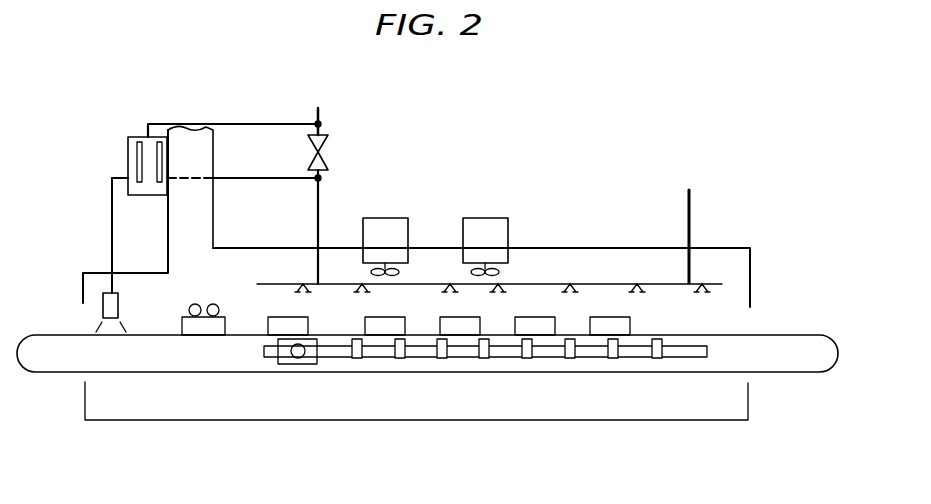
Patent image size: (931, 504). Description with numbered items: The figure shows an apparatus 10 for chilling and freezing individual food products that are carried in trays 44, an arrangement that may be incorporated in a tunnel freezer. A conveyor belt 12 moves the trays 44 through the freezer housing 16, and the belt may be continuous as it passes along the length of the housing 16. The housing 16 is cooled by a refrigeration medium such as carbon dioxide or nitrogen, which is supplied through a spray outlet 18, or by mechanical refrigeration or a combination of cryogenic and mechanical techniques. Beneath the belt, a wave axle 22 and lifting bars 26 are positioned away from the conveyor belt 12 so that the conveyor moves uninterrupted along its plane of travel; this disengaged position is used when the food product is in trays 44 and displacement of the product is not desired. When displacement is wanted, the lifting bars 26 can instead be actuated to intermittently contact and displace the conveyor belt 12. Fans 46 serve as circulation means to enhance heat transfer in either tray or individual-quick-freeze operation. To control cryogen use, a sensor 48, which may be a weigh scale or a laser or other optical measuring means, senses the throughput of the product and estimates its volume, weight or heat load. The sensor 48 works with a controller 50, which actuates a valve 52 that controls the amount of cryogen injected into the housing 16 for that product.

The apparatus 10 is at (70, 387).
The conveyor belt 12 is at (838, 365).
The freezer housing 16 is at (727, 258).
The spray outlet 18 is at (612, 283).
The wave axle 22 is at (687, 352).
The lifting bars 26 is at (568, 358).
The trays 44 is at (278, 326).
The fans 46 is at (485, 218).
The sensor 48 is at (103, 318).
The controller 50 is at (135, 137).
The valve 52 is at (328, 152).